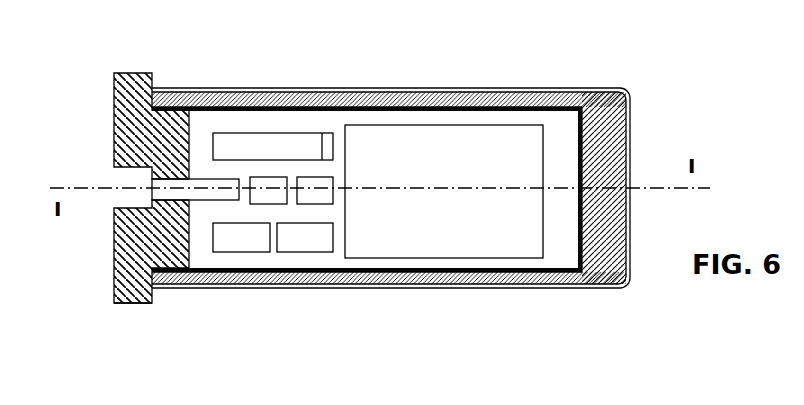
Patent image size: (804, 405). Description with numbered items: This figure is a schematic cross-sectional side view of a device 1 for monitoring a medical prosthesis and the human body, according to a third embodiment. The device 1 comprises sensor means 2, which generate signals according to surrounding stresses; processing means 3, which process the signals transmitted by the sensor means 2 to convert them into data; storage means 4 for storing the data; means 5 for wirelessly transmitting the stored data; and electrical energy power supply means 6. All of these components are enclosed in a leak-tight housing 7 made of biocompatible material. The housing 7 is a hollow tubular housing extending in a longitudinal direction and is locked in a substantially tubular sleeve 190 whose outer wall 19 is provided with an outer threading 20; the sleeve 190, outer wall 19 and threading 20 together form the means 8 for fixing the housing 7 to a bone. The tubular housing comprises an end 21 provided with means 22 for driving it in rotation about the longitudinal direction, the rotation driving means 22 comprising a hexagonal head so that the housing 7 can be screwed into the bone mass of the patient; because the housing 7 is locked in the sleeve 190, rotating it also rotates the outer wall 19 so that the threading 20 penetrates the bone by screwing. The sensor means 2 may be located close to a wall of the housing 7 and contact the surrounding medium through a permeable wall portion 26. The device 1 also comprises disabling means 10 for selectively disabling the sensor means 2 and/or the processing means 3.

The device for monitoring a medical prosthesis and the human body 1 is at (96, 257).
The sensor means 2 is at (200, 186).
The processing means 3 is at (273, 146).
The storage means 4 is at (241, 237).
The means for wirelessly transmitting the stored data 5 is at (305, 237).
The electrical energy power supply means 6 is at (444, 191).
The leak-tight housing 7 is at (285, 114).
The means for fixing to a bone 8 is at (516, 87).
The disabling means 10 is at (268, 190).
The outer wall 19 is at (543, 282).
The outer threading 20 is at (345, 282).
The end 21 is at (137, 303).
The means for driving in rotation 22 is at (125, 289).
The permeable wall portion 26 is at (150, 184).
The substantially tubular sleeve 190 is at (399, 91).